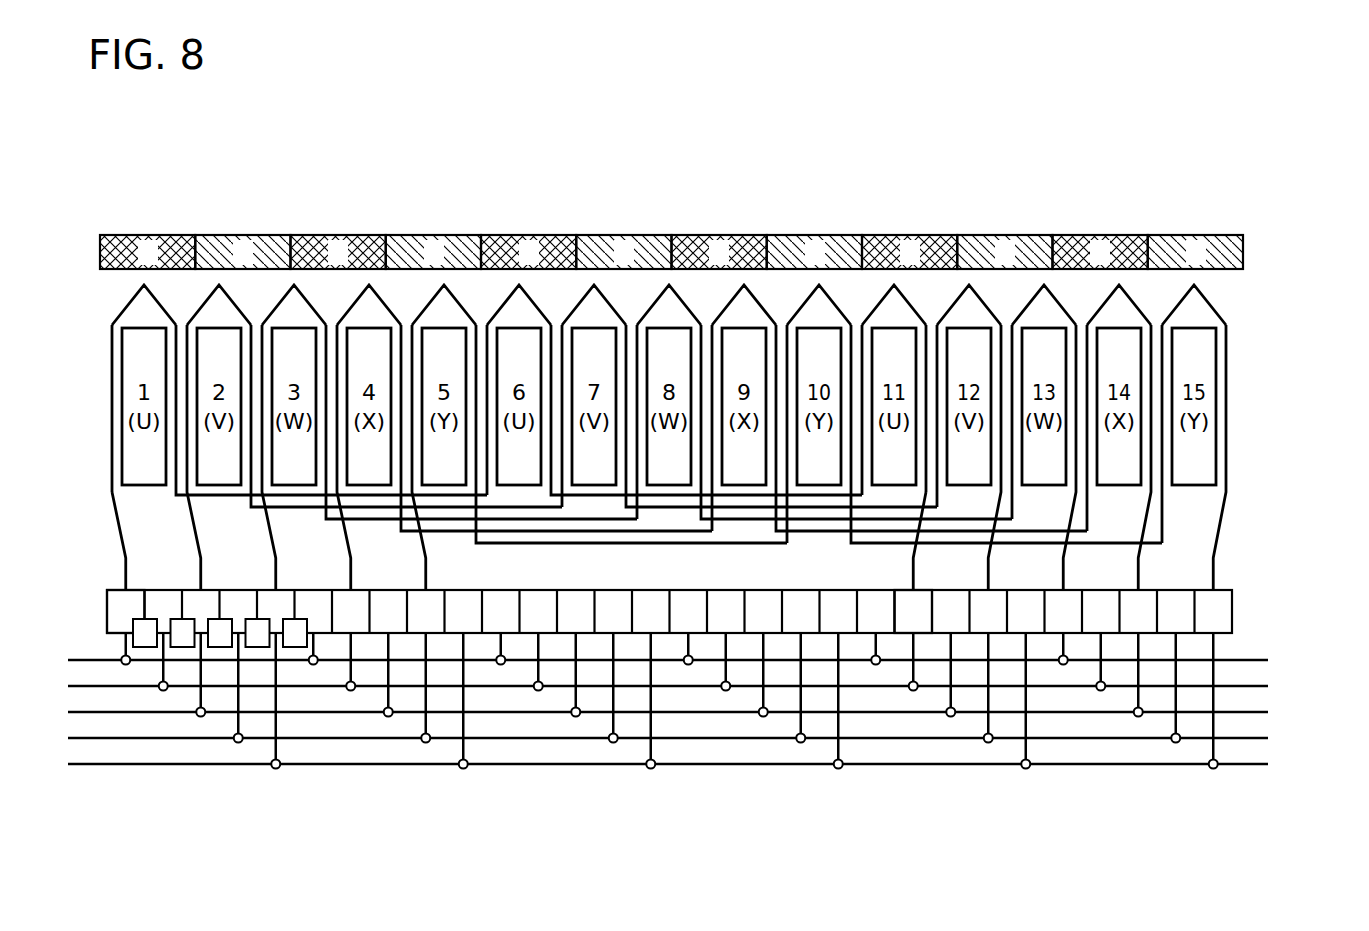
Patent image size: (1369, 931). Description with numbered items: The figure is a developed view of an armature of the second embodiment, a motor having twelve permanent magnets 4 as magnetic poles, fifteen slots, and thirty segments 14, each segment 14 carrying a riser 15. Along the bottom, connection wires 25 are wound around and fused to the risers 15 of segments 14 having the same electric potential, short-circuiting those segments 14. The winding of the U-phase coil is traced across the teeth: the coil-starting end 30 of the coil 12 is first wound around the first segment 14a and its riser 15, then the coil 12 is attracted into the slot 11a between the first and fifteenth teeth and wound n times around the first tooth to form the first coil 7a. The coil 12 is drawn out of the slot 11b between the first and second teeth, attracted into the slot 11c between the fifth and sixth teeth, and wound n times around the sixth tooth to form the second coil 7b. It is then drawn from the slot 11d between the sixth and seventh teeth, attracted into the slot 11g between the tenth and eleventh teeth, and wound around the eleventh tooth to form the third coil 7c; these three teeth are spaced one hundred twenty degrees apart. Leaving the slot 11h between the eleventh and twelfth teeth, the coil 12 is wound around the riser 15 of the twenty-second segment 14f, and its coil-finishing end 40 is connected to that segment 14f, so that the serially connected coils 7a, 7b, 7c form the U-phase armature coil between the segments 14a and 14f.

The permanent magnet 4 is at (138, 235).
The first coil 7a is at (252, 380).
The second coil 7b is at (646, 320).
The third coil 7c is at (884, 368).
The slot 11a is at (107, 332).
The slot 11b is at (182, 327).
The slot 11c is at (481, 330).
The slot 11d is at (556, 330).
The slot 11g is at (857, 330).
The slot 11h is at (932, 330).
The coil 12 is at (353, 306).
The coil-starting end 30 is at (123, 565).
The coil-finishing end 40 is at (912, 570).
The segment 14 is at (711, 709).
The riser 15 is at (647, 709).
The first segment 14a is at (118, 633).
The twenty-second segment 14f is at (908, 636).
The connection wire 25 is at (1255, 650).